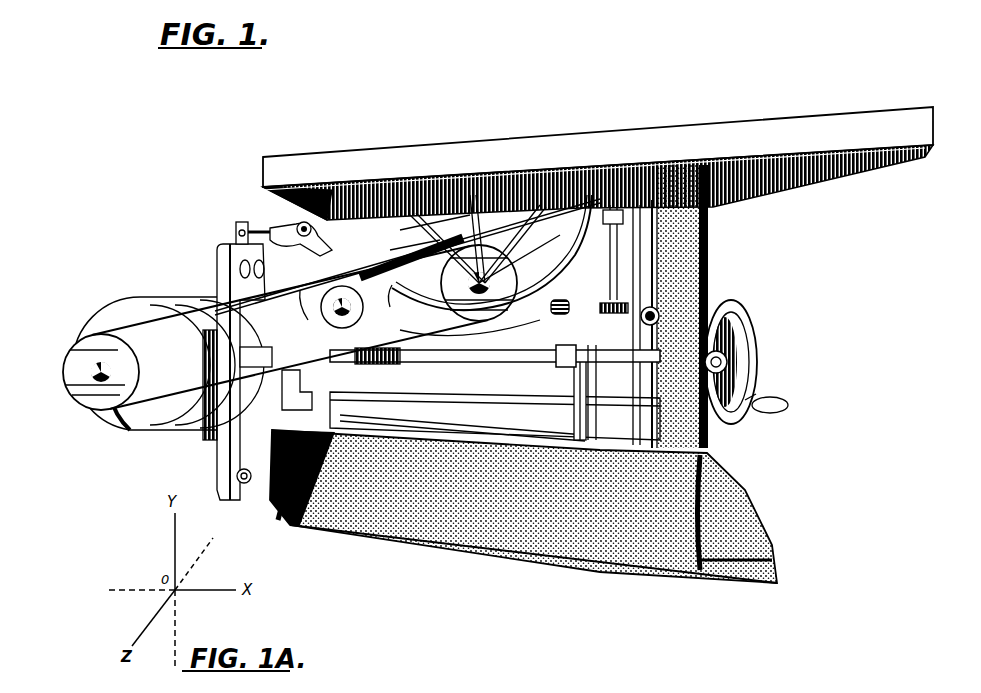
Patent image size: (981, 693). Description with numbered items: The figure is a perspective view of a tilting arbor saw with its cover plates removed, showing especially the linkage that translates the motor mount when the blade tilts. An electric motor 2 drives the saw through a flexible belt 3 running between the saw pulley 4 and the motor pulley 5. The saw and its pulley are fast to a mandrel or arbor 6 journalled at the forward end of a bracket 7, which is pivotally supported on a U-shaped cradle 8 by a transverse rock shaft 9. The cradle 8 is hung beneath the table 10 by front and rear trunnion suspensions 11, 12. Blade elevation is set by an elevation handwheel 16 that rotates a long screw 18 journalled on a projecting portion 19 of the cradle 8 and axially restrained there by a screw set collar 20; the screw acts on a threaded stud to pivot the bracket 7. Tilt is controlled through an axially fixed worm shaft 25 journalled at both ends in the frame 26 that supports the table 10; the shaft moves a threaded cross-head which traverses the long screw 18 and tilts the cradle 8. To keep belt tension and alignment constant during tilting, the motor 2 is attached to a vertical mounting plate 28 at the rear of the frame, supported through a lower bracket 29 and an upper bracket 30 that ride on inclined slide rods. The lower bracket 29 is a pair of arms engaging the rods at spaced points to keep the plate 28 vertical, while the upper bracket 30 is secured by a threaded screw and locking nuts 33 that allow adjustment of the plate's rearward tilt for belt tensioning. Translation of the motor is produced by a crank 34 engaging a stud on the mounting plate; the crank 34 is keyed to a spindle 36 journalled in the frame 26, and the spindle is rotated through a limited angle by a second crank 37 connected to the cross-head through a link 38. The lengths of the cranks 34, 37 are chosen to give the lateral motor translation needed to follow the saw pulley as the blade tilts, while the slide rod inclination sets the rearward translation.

The electric motor 2 is at (132, 300).
The flexible belt 3 is at (298, 292).
The saw pulley 4 is at (508, 292).
The motor pulley 5 is at (66, 365).
The mandrel or arbor 6 is at (482, 296).
The bracket 7 is at (387, 305).
The U-shaped cradle 8 is at (470, 331).
The transverse rock shaft 9 is at (320, 307).
The table 10 is at (788, 124).
The front trunnion suspension 11 is at (624, 216).
The rear trunnion suspension 12 is at (327, 262).
The elevation handwheel 16 is at (750, 332).
The long screw 18 is at (420, 362).
The projecting portion 19 is at (587, 380).
The screw set collar 20 is at (560, 367).
The worm shaft 25 is at (628, 306).
The frame 26 is at (710, 243).
The vertical mounting plate 28 is at (226, 264).
The lower bracket 29 is at (288, 407).
The upper bracket 30 is at (298, 222).
The threaded screw and locking nuts 33 is at (246, 220).
The crank 34 is at (312, 396).
The spindle 36 is at (425, 418).
The second crank 37 is at (573, 414).
The link 38 is at (562, 297).